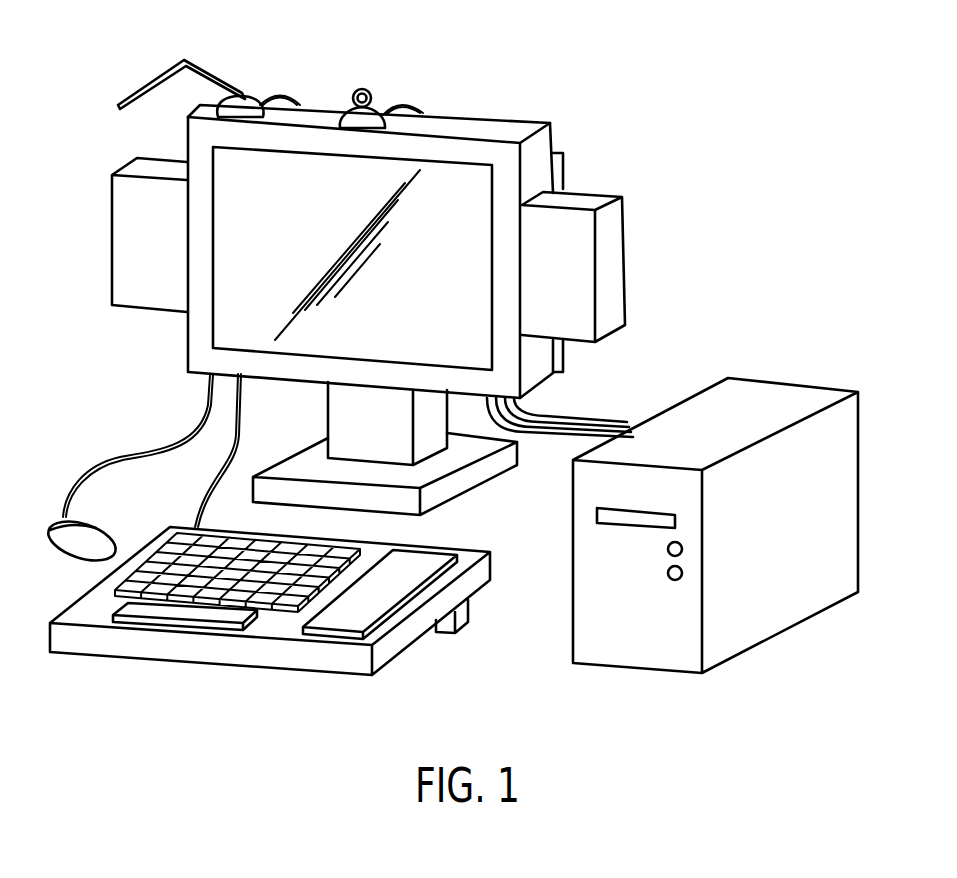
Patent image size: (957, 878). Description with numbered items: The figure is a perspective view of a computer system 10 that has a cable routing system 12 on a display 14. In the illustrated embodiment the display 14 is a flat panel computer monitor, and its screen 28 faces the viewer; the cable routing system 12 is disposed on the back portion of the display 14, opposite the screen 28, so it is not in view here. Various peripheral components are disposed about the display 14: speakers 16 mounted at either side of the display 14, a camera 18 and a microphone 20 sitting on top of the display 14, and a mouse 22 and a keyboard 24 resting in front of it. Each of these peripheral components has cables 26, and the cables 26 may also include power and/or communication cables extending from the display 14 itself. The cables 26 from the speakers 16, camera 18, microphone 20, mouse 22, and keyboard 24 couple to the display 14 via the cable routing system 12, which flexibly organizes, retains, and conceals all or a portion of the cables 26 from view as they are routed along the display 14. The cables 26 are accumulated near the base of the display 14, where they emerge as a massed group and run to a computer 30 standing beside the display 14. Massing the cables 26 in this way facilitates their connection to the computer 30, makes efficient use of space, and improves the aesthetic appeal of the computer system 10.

The computer system 10 is at (664, 62).
The cable routing system 12 is at (565, 167).
The display 14 is at (510, 381).
The speakers 16 is at (133, 218).
The camera 18 is at (367, 90).
The microphone 20 is at (200, 66).
The mouse 22 is at (113, 533).
The keyboard 24 is at (275, 628).
The cables 26 is at (278, 91).
The screen 28 is at (447, 183).
The computer 30 is at (838, 448).